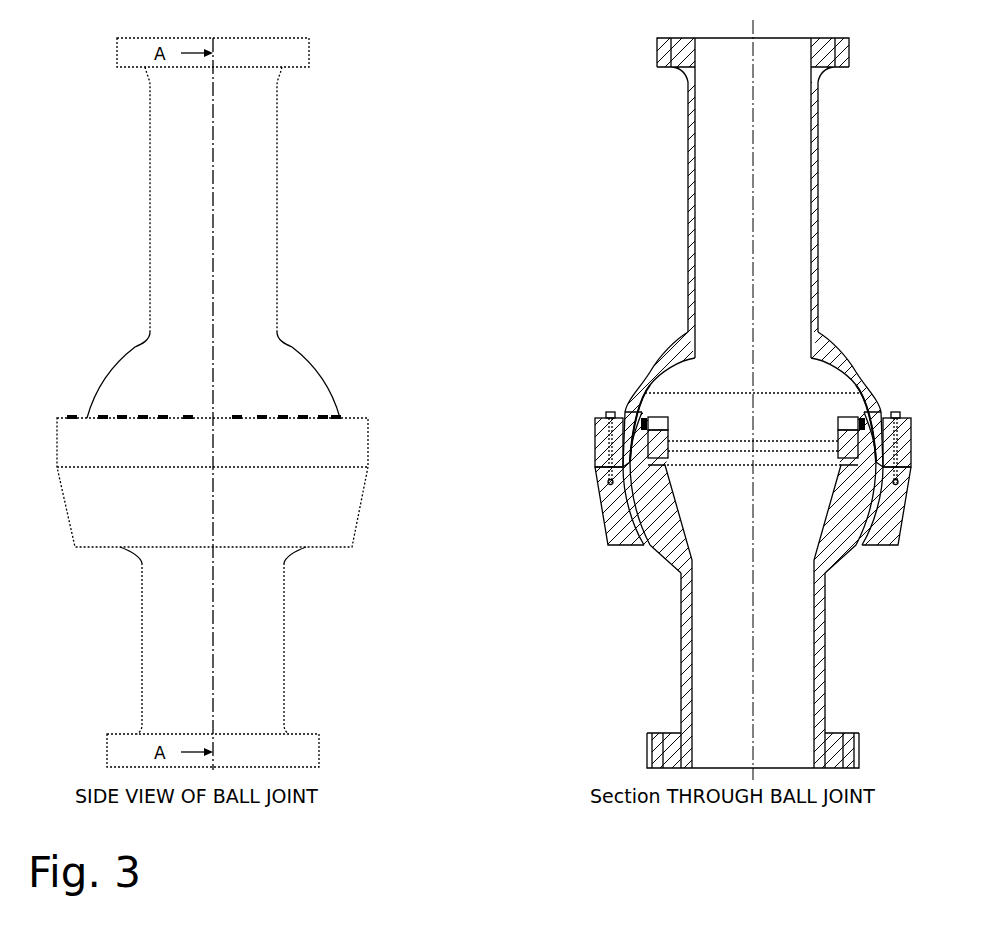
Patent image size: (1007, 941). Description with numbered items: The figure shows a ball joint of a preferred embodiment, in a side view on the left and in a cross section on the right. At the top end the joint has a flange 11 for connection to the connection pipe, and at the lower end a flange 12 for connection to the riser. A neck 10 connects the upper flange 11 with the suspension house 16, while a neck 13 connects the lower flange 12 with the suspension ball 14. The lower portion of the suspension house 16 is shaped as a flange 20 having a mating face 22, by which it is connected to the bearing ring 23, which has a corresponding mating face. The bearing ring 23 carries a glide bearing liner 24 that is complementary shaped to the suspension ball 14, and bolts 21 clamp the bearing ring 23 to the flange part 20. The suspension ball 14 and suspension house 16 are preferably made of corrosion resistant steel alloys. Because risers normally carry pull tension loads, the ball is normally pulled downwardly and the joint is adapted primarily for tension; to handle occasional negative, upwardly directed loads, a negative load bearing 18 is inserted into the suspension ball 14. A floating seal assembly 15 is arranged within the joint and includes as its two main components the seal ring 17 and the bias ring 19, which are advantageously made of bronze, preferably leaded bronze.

The neck 10 is at (688, 243).
The flange 11 is at (657, 53).
The flange 12 is at (647, 752).
The neck 13 is at (681, 642).
The suspension ball 14 is at (615, 545).
The floating seal assembly 15 is at (805, 408).
The suspension house 16 is at (648, 378).
The seal ring 17 is at (637, 417).
The negative load bearing 18 is at (633, 430).
The bias ring 19 is at (627, 440).
The flange 20 is at (597, 445).
The bolts 21 is at (597, 457).
The mating face 22 is at (594, 467).
The bearing ring 23 is at (620, 513).
The glide bearing liner 24 is at (660, 528).